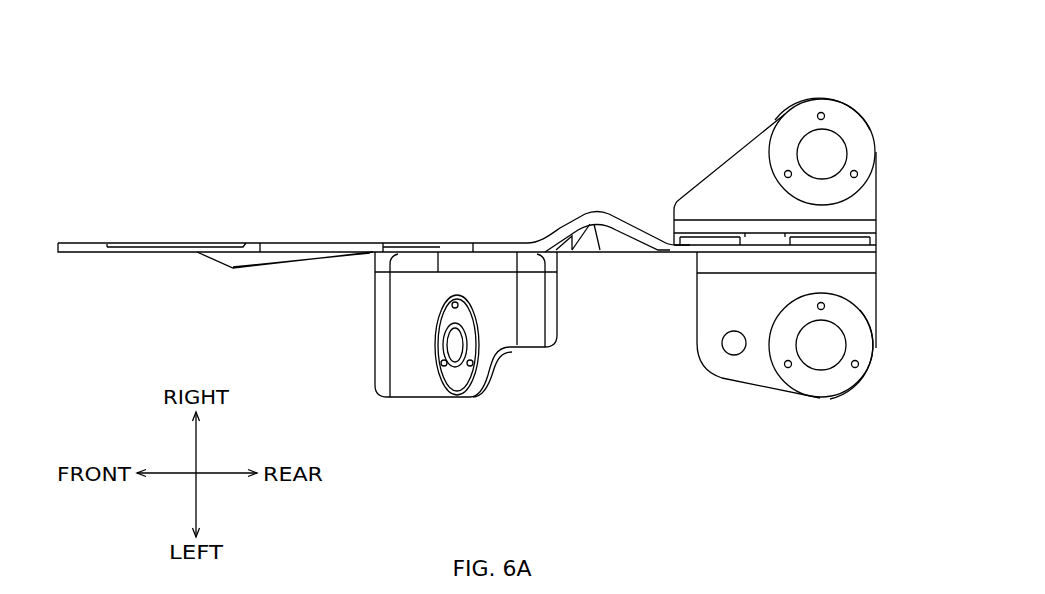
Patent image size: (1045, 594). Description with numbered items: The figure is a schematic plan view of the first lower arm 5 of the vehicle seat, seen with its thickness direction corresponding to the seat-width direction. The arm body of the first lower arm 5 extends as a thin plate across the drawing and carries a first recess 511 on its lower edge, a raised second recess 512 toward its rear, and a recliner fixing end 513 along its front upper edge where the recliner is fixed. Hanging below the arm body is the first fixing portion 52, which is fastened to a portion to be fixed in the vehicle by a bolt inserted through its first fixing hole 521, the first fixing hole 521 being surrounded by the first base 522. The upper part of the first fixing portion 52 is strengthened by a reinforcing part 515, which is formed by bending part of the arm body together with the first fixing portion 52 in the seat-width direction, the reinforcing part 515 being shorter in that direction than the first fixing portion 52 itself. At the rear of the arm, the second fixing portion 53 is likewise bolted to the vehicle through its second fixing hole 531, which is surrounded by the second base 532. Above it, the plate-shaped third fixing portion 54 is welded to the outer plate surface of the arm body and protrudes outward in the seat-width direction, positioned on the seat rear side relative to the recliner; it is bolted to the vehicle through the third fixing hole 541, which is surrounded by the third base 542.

The first lower arm 5 is at (213, 167).
The first recess 511 is at (233, 268).
The second recess 512 is at (595, 222).
The recliner fixing end 513 is at (293, 247).
The reinforcing part 515 is at (533, 327).
The first fixing portion 52 is at (407, 330).
The first fixing hole 521 is at (453, 343).
The first base 522 is at (455, 378).
The second fixing portion 53 is at (715, 325).
The second fixing hole 531 is at (836, 350).
The second base 532 is at (860, 345).
The third fixing portion 54 is at (737, 178).
The third fixing hole 541 is at (812, 161).
The third base 542 is at (848, 127).